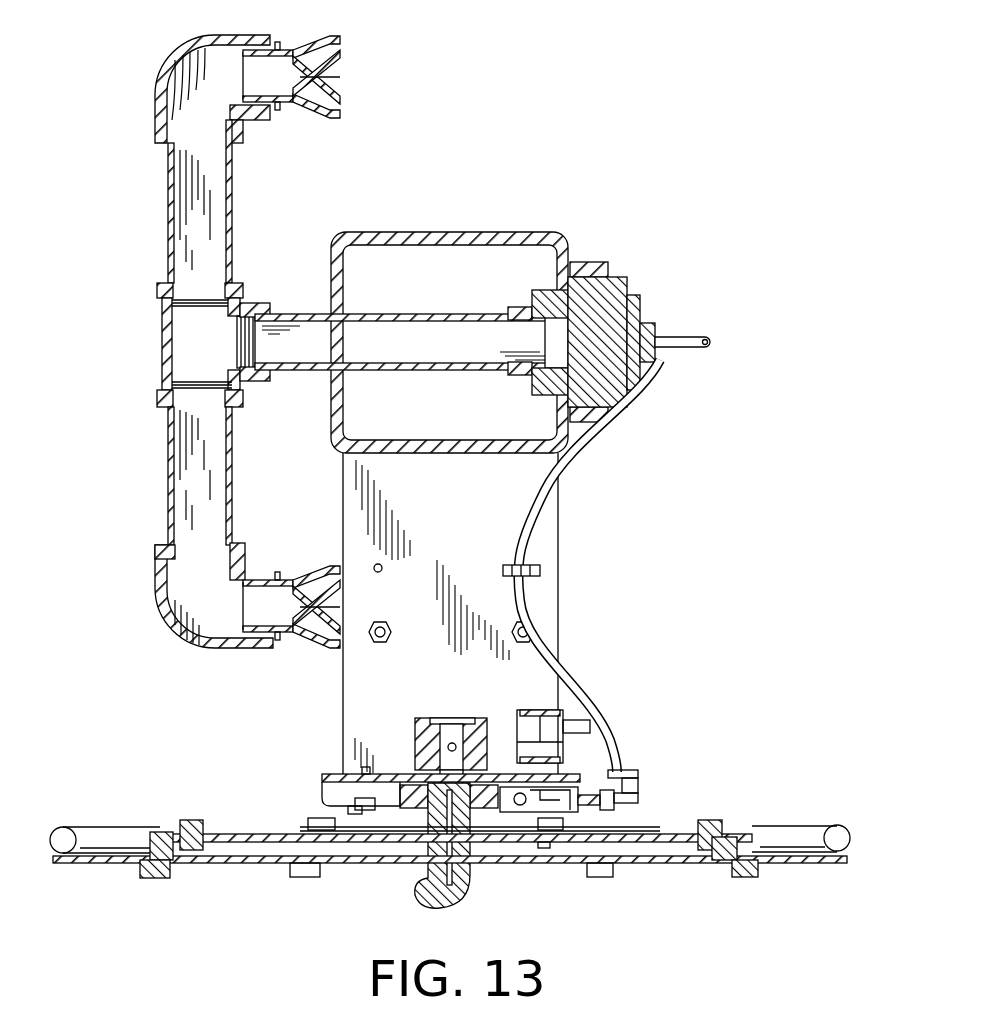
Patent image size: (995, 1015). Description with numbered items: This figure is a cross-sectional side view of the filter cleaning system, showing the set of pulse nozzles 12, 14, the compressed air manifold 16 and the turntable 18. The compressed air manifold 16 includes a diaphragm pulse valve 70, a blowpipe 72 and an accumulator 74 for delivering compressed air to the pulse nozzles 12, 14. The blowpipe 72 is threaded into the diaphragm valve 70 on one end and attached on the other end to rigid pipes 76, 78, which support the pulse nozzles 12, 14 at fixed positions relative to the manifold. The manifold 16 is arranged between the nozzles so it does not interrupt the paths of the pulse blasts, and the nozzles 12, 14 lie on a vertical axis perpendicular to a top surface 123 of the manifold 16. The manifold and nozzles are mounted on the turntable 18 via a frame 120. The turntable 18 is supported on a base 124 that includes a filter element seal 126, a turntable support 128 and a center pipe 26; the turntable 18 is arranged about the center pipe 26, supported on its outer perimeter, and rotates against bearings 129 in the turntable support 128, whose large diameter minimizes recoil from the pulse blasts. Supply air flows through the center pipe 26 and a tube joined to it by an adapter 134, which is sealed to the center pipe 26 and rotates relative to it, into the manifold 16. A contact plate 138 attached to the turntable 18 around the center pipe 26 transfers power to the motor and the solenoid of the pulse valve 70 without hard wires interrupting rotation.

The pulse nozzle 12 is at (336, 50).
The pulse nozzle 14 is at (338, 640).
The compressed air manifold 16 is at (482, 235).
The turntable 18 is at (667, 835).
The center pipe 26 is at (472, 880).
The diaphragm pulse valve 70 is at (635, 286).
The blowpipe 72 is at (433, 316).
The accumulator 74 is at (553, 244).
The pipe 76 is at (170, 210).
The pipe 78 is at (165, 472).
The frame 120 is at (540, 549).
The top surface 123 is at (386, 236).
The base 124 is at (810, 845).
The filter element seal 126 is at (98, 830).
The turntable support 128 is at (163, 880).
The bearings 129 is at (153, 834).
The adapter 134 is at (485, 720).
The contact plate 138 is at (522, 832).